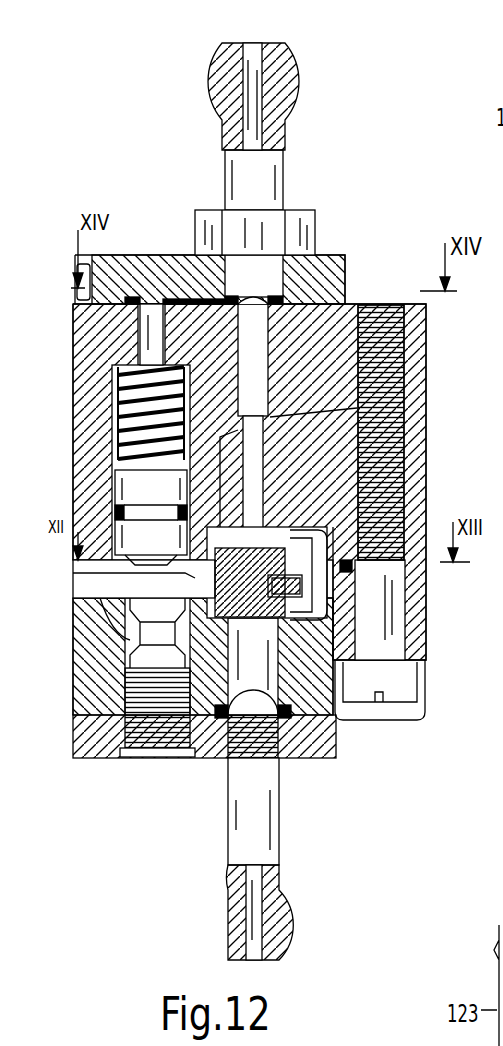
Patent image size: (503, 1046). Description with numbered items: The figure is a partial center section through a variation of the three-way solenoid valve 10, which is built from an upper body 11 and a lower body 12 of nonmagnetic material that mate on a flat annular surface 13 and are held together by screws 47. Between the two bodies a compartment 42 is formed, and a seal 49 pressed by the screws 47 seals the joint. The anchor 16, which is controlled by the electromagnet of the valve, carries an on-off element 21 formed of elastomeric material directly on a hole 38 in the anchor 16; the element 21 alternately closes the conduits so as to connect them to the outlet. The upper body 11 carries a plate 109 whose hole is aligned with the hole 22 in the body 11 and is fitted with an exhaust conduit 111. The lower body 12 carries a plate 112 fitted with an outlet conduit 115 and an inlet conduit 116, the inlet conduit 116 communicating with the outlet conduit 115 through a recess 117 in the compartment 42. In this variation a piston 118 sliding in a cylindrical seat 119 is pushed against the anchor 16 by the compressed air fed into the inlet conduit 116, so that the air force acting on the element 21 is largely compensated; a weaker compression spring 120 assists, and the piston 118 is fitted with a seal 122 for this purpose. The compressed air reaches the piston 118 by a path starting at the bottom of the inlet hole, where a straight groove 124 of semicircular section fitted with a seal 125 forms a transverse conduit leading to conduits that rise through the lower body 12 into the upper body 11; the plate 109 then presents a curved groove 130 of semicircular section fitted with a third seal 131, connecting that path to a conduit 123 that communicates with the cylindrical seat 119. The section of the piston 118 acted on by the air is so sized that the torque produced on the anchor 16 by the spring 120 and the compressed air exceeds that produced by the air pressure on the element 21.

The three-way solenoid valve 10 is at (376, 180).
The upper body 11 is at (78, 437).
The lower body 12 is at (90, 673).
The flat annular surface 13 is at (352, 568).
The anchor 16 is at (92, 583).
The on-off element 21 is at (403, 450).
The hole 22 is at (357, 408).
The hole 38 is at (297, 585).
The compartment 42 is at (358, 508).
The screws 47 is at (400, 616).
The seal 49 is at (403, 527).
The plate 109 is at (132, 258).
The exhaust conduit 111 is at (257, 43).
The plate 112 is at (327, 745).
The outlet conduit 115 is at (142, 757).
The inlet conduit 116 is at (258, 962).
The recess 117 is at (120, 640).
The piston 118 is at (112, 490).
The cylindrical seat 119 is at (138, 340).
The compression spring 120 is at (117, 388).
The seal 122 is at (116, 511).
The conduit 123 is at (77, 290).
The groove 124 is at (266, 771).
The seal 125 is at (217, 762).
The groove 130 is at (166, 297).
The third seal 131 is at (284, 252).